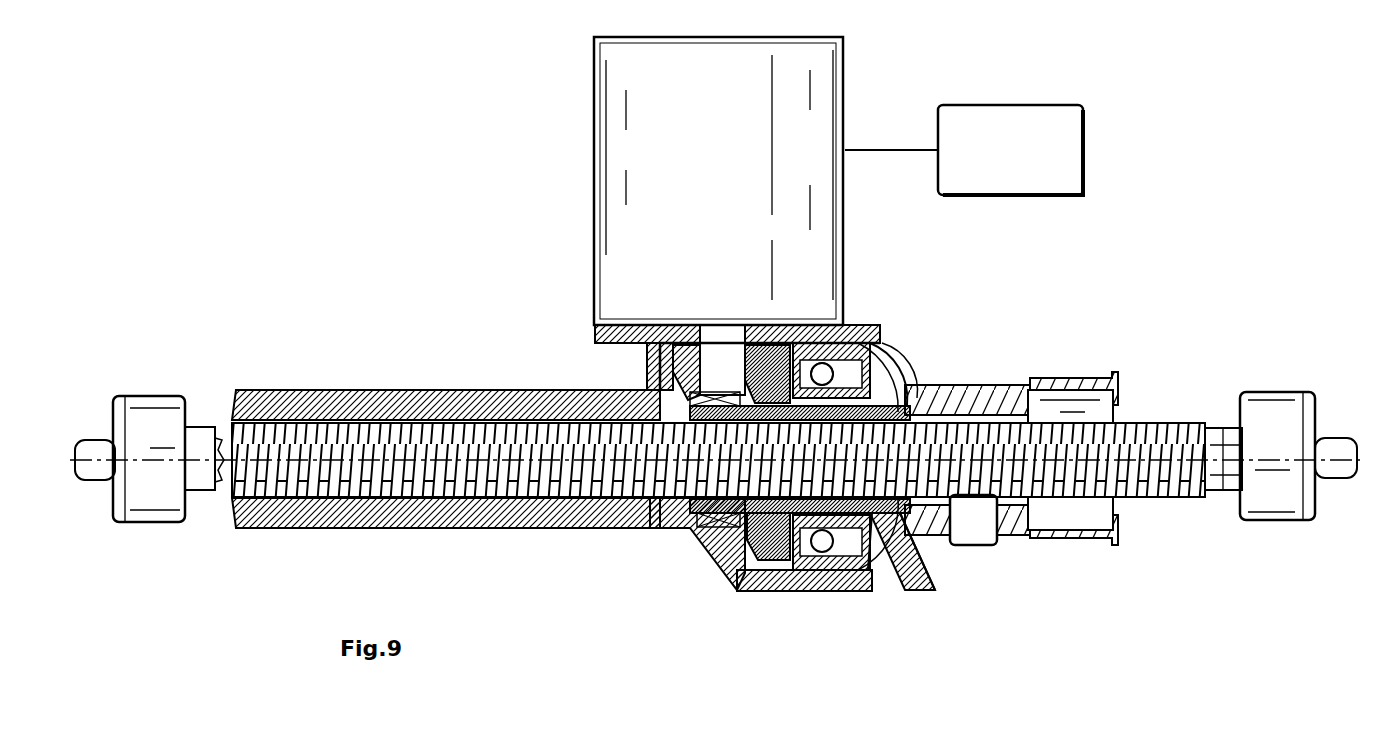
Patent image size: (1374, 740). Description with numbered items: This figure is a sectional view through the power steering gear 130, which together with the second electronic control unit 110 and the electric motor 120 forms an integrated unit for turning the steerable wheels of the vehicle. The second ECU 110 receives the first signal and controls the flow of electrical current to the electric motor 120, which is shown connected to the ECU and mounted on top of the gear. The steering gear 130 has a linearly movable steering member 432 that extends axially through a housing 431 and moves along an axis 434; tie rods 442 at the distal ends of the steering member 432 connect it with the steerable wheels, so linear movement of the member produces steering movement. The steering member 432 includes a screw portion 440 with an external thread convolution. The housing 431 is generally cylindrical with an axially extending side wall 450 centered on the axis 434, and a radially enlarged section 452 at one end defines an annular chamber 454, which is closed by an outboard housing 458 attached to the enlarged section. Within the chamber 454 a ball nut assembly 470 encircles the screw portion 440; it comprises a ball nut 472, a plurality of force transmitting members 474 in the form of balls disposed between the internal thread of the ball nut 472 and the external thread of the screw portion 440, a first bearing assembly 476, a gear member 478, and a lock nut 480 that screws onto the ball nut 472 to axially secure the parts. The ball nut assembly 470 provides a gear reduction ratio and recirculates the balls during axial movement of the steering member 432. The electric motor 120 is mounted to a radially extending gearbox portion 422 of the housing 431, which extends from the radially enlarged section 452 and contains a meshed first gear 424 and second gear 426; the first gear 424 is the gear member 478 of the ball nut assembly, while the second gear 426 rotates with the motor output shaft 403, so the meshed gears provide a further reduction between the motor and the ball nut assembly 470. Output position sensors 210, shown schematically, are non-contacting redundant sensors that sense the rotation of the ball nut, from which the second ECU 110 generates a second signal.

The second electronic control unit 110 is at (990, 104).
The electric motor 120 is at (846, 70).
The power steering gear 130 is at (296, 282).
The output position sensors 210 is at (975, 522).
The motor output shaft 403 is at (760, 325).
The gearbox portion 422 is at (647, 358).
The first gear 424 is at (800, 459).
The second gear 426 is at (690, 385).
The housing 431 is at (278, 529).
The steering member 432 is at (1154, 420).
The axis 434 is at (152, 468).
The screw portion 440 is at (1155, 500).
The tie rods 442 is at (88, 445).
The side wall 450 is at (448, 513).
The radially enlarged section 452 is at (790, 592).
The annular chamber 454 is at (885, 556).
The outboard housing 458 is at (994, 389).
The ball nut assembly 470 is at (893, 400).
The ball nut 472 is at (882, 365).
The force transmitting members 474 is at (872, 392).
The first bearing assembly 476 is at (838, 345).
The gear member 478 is at (745, 592).
The lock nut 480 is at (897, 562).